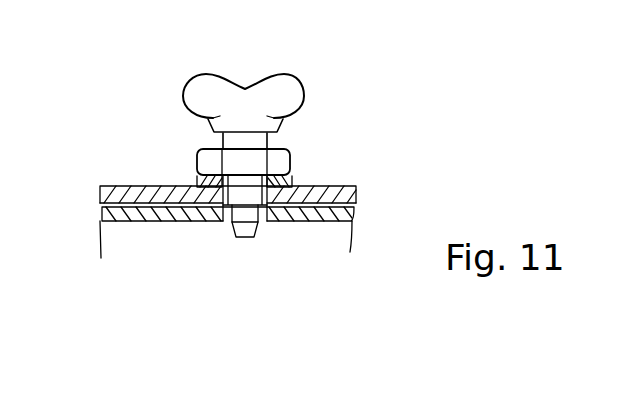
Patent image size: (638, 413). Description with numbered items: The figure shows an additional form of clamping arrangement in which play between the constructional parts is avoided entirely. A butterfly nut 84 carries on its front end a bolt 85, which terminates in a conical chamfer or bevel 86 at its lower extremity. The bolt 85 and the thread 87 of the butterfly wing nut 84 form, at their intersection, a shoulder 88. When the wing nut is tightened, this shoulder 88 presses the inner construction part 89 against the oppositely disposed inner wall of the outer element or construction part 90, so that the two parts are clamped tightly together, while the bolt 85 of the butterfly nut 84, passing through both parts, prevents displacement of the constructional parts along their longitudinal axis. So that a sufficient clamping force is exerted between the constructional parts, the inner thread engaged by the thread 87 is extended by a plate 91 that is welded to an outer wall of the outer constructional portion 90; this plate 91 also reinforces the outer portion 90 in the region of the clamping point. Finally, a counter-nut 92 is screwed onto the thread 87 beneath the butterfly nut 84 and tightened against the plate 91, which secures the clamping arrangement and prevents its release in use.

The butterfly nut 84 is at (310, 122).
The bolt 85 is at (245, 238).
The chamfered bolt end 86 is at (232, 229).
The thread 87 is at (292, 185).
The shoulder 88 is at (270, 222).
The inner construction part 89 is at (158, 222).
The outer construction part 90 is at (98, 195).
The plate 91 is at (204, 185).
The counter-nut 92 is at (283, 160).